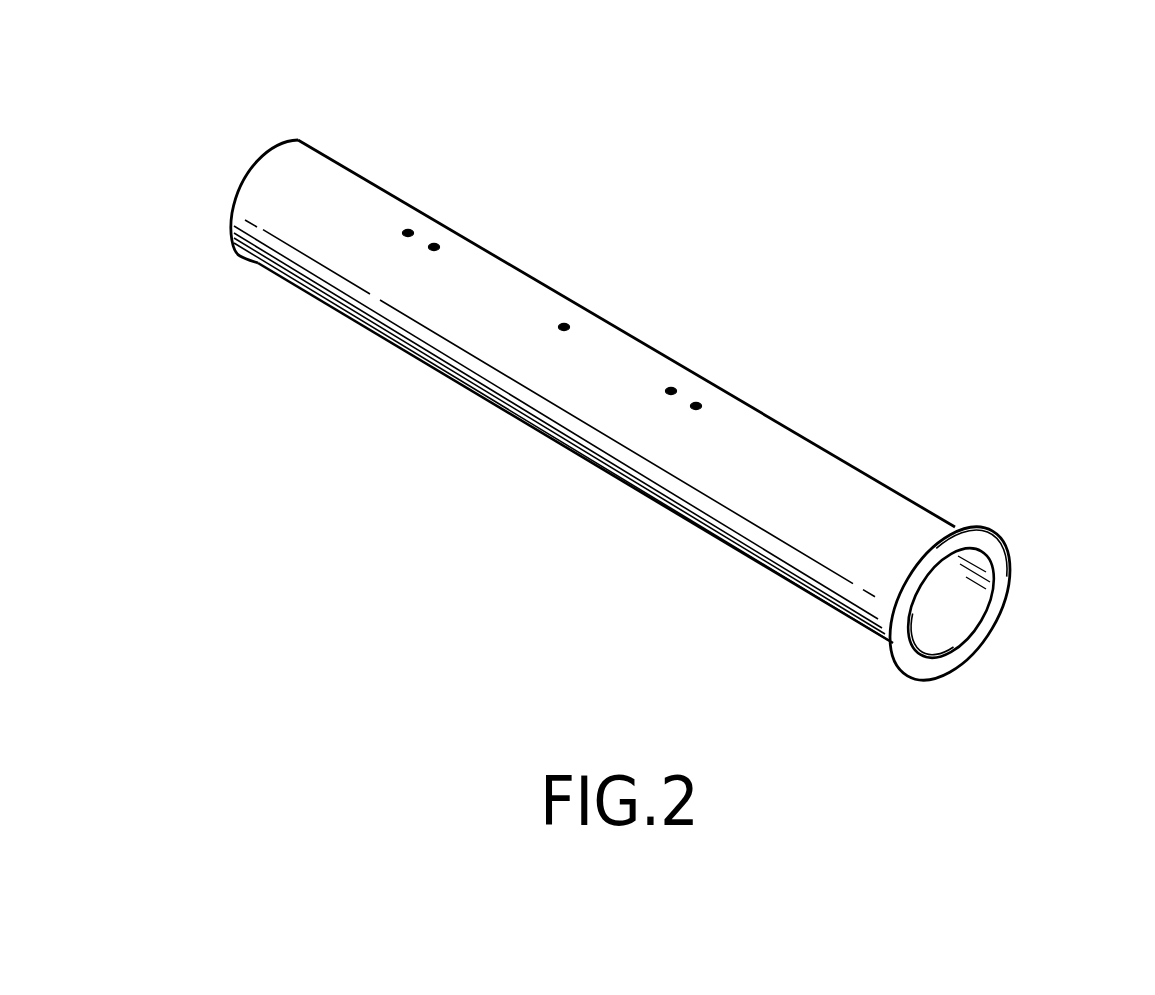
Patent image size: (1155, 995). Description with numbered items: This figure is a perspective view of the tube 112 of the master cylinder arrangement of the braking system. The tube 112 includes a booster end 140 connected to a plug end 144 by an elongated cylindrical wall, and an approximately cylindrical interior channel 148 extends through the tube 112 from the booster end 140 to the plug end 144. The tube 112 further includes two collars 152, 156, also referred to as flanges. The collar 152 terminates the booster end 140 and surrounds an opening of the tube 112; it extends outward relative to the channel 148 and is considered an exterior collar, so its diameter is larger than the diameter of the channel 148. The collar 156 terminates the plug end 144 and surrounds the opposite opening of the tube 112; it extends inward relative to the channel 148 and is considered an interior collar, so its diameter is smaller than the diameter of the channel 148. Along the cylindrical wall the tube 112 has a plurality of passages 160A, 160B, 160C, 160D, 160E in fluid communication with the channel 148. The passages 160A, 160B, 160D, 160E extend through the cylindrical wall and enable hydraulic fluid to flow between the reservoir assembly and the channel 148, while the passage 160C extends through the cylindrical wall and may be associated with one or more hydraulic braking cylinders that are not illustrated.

The tube 112 is at (699, 179).
The booster end 140 is at (862, 627).
The plug end 144 is at (347, 166).
The interior channel 148 is at (946, 602).
The collar 152 is at (970, 527).
The collar 156 is at (252, 167).
The passage 160A is at (409, 230).
The passage 160B is at (436, 245).
The passage 160C is at (566, 325).
The passage 160D is at (672, 389).
The passage 160E is at (698, 404).